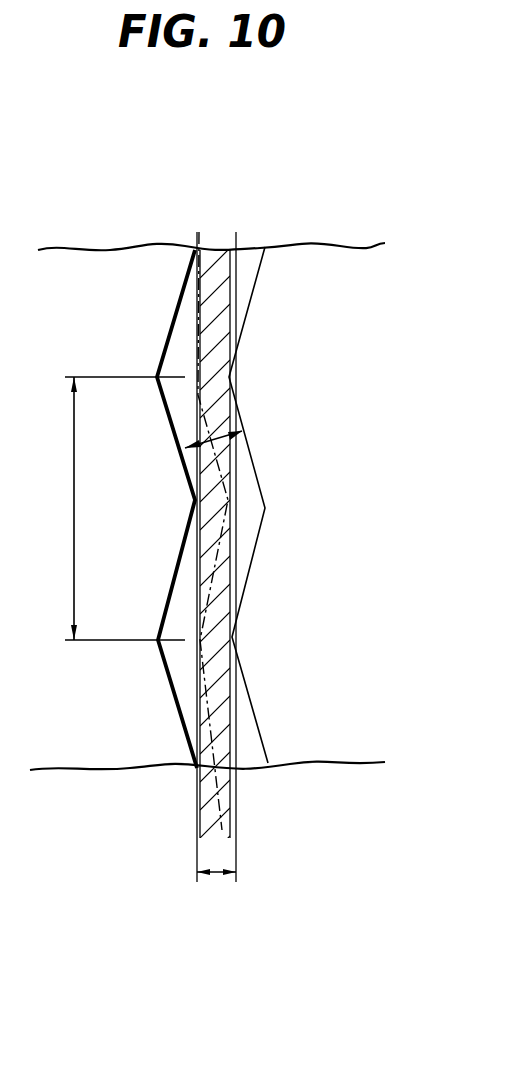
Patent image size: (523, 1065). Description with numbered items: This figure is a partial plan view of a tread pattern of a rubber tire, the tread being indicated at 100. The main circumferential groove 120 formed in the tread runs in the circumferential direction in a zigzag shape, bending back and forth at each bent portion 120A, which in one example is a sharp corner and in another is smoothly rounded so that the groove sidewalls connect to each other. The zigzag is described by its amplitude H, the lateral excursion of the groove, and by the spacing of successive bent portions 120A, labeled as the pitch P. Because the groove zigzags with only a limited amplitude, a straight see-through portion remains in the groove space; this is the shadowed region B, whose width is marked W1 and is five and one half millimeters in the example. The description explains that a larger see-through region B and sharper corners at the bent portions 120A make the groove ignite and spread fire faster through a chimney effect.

The bellows 100 is at (362, 240).
The main circumferential groove 120 is at (246, 252).
The bent portion 120A is at (195, 500).
The shadowed region B is at (206, 250).
The pitch P is at (124, 508).
The amplitude H is at (216, 569).
The wall thickness W1 is at (230, 450).